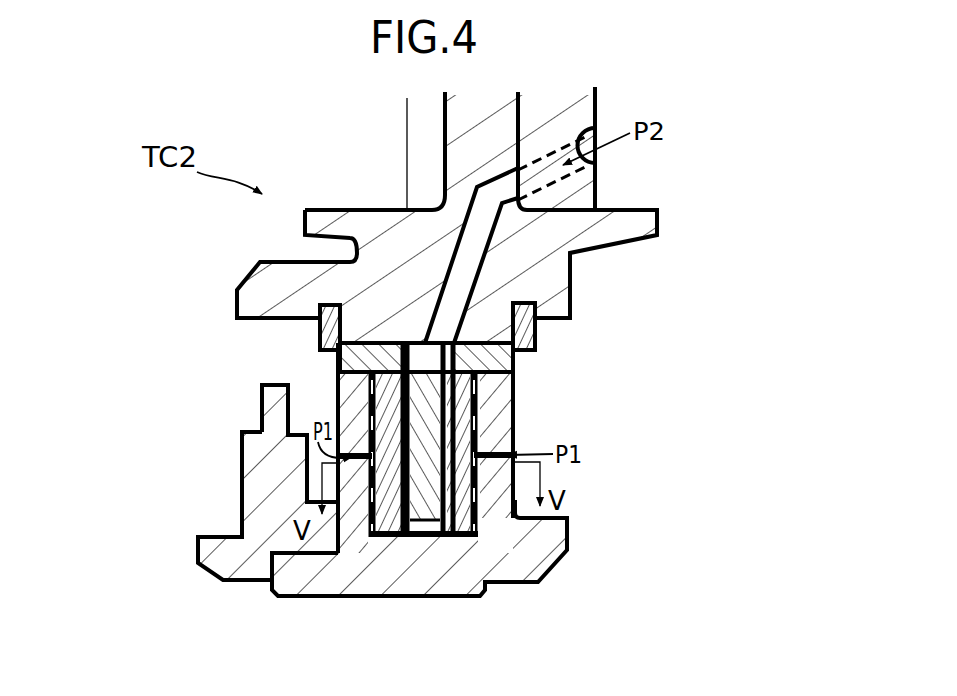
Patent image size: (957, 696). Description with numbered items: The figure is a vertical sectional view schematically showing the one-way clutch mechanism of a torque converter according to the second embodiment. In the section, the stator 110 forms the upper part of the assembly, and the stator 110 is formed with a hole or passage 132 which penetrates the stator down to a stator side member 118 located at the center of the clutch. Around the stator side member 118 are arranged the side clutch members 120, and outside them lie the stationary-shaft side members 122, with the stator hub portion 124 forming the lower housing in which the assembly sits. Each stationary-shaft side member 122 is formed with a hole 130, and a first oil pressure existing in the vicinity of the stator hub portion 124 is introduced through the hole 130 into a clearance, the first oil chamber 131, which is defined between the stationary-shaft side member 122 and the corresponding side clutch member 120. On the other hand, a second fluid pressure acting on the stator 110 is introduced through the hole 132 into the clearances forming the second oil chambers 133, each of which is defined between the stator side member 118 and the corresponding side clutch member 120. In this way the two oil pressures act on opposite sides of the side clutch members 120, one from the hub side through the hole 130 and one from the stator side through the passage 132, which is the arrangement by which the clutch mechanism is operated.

The stator 110 is at (533, 125).
The hole or passage 132 is at (468, 268).
The clearance (second oil chamber) 133 is at (338, 363).
The stationary-shaft side member 122 is at (515, 392).
The clearance (first oil chamber) 131 is at (366, 398).
The hole 130 is at (340, 480).
The side clutch member 120 is at (390, 533).
The stator side member 118 is at (425, 537).
The stator hub portion 124 is at (540, 578).